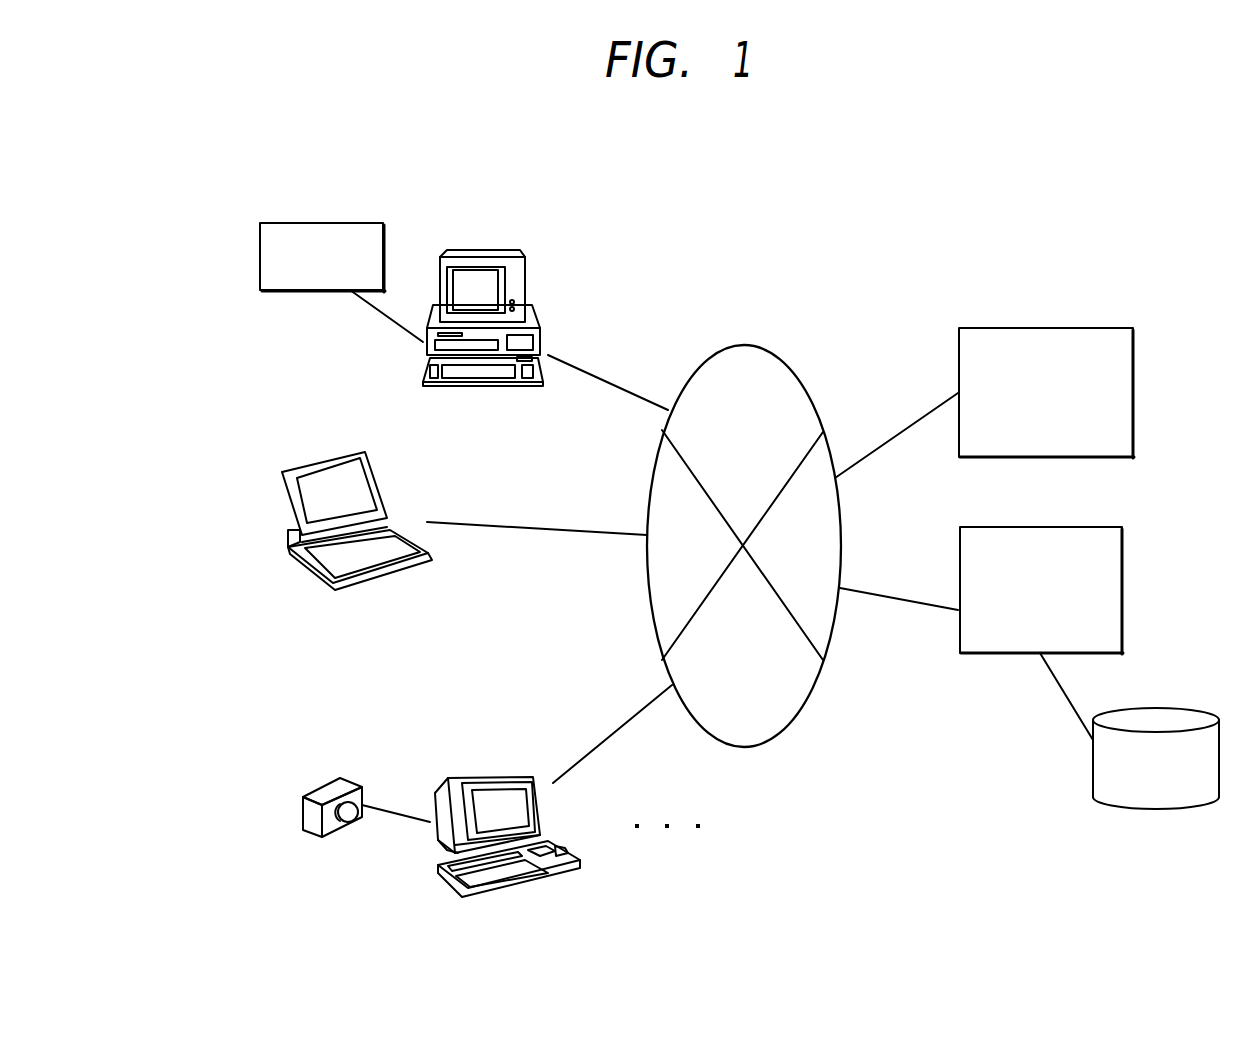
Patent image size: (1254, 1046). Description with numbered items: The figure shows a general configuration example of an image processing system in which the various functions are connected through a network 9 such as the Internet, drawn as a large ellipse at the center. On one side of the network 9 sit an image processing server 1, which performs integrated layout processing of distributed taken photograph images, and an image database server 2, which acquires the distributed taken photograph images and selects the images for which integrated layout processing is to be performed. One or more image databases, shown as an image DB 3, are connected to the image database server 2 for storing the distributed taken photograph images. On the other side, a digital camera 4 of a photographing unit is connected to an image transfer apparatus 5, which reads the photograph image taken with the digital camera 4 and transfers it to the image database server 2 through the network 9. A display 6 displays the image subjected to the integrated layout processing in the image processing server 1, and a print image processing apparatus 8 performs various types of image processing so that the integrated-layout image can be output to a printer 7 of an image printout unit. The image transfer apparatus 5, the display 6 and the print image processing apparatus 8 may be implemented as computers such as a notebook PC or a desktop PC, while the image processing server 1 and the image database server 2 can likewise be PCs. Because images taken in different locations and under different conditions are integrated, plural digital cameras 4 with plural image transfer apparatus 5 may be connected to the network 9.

The image processing server 1 is at (1077, 327).
The image database server 2 is at (1065, 525).
The image database 3 is at (1167, 708).
The digital camera 4 is at (313, 789).
The image transfer apparatus 5 is at (492, 777).
The display 6 is at (382, 490).
The printer 7 is at (330, 222).
The print image processing apparatus 8 is at (495, 250).
The network 9 is at (758, 345).